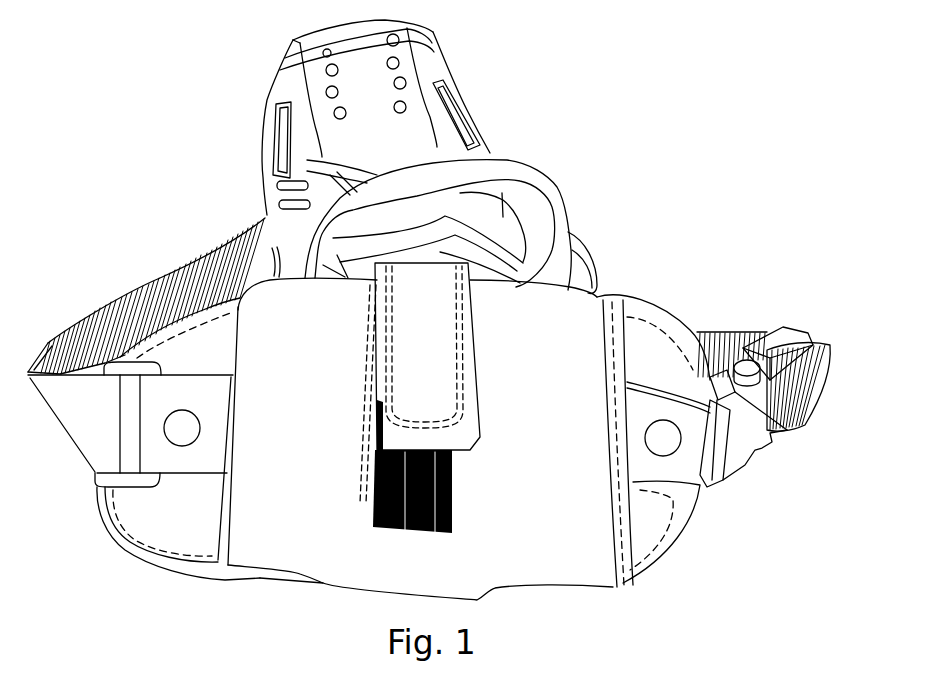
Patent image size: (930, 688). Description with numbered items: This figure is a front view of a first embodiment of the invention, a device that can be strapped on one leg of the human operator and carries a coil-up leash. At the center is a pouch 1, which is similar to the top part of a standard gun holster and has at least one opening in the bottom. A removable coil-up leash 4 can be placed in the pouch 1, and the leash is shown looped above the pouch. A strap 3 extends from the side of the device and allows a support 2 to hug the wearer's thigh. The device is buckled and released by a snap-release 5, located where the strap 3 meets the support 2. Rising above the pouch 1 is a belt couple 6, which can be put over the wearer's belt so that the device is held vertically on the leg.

The pouch 1 is at (260, 540).
The support 2 is at (650, 338).
The strap 3 is at (163, 277).
The removable coil-up leash 4 is at (443, 180).
The snap-release 5 is at (740, 420).
The belt couple 6 is at (403, 138).